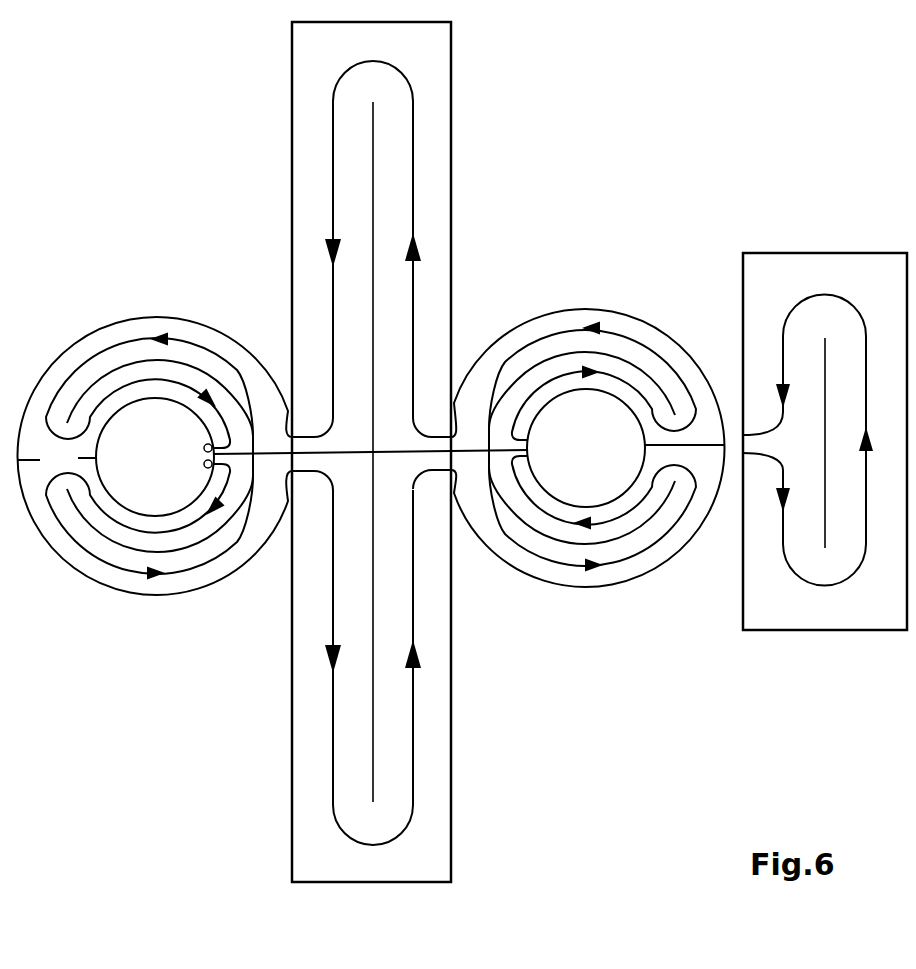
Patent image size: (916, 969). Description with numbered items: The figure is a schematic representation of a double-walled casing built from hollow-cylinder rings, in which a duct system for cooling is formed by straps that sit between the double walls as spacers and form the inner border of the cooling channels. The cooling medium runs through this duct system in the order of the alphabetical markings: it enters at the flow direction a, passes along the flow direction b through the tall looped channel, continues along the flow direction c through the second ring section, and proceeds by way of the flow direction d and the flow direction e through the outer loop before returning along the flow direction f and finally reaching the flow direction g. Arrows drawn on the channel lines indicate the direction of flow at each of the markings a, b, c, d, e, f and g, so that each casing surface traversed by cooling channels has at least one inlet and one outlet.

The flow direction a is at (180, 464).
The flow direction b is at (371, 454).
The flow direction c is at (588, 472).
The flow direction d is at (536, 458).
The flow direction e is at (825, 441).
The flow direction f is at (552, 440).
The flow direction g is at (198, 448).